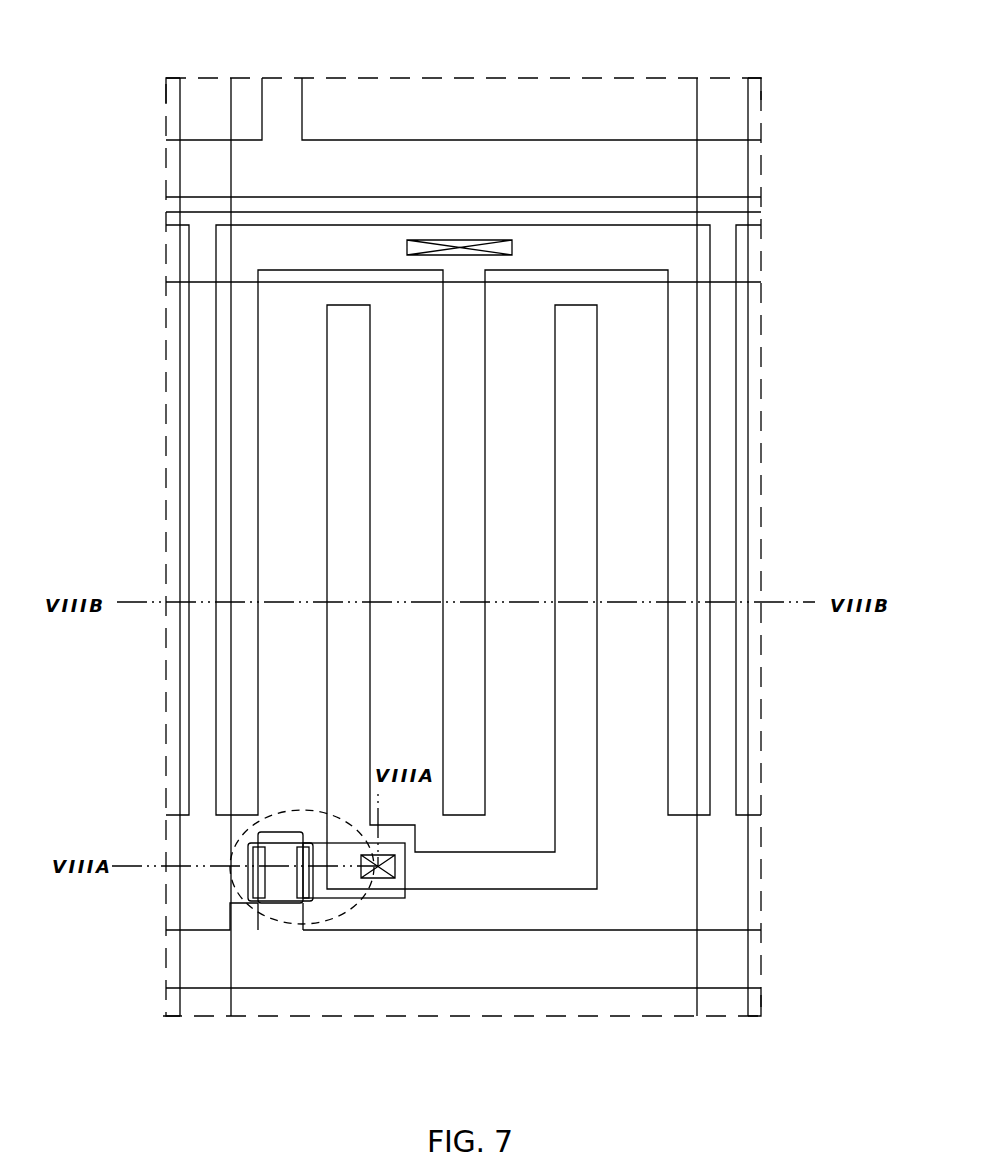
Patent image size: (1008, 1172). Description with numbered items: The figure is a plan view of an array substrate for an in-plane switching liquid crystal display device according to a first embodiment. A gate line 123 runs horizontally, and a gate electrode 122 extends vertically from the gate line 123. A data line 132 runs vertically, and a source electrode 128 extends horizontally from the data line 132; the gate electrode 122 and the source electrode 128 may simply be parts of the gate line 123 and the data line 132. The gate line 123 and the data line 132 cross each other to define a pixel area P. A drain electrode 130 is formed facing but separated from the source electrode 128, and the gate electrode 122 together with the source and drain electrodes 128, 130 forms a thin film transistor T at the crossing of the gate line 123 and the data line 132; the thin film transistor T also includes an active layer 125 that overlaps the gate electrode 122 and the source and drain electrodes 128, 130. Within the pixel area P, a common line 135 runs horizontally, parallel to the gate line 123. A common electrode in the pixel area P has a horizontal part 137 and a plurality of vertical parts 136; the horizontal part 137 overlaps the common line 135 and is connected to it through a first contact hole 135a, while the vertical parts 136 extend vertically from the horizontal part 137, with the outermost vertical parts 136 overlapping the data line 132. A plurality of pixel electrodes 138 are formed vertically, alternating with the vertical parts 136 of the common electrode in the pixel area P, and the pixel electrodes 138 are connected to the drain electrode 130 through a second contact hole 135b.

The gate electrode 122 is at (290, 832).
The gate line 123 is at (570, 988).
The active layer 125 is at (283, 903).
The source electrode 128 is at (243, 853).
The drain electrode 130 is at (390, 898).
The data line 132 is at (747, 880).
The common line 135 is at (542, 557).
The first contact hole 135a is at (462, 238).
The second contact hole 135b is at (396, 867).
The vertical parts 136 is at (709, 455).
The horizontal part 137 is at (607, 227).
The pixel electrodes 138 is at (596, 738).
The pixel area P is at (633, 548).
The thin film transistor T is at (340, 920).